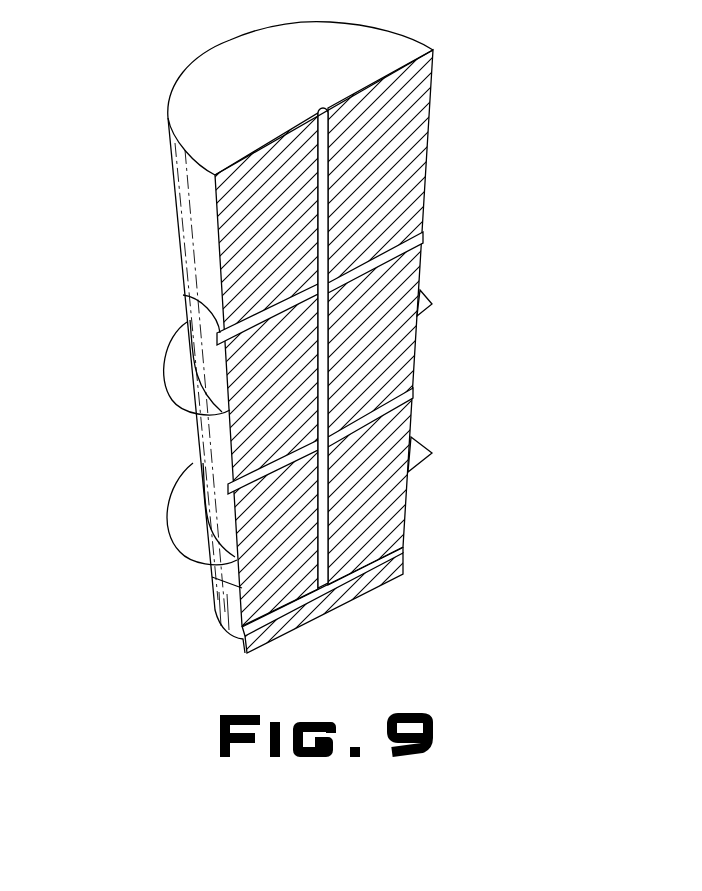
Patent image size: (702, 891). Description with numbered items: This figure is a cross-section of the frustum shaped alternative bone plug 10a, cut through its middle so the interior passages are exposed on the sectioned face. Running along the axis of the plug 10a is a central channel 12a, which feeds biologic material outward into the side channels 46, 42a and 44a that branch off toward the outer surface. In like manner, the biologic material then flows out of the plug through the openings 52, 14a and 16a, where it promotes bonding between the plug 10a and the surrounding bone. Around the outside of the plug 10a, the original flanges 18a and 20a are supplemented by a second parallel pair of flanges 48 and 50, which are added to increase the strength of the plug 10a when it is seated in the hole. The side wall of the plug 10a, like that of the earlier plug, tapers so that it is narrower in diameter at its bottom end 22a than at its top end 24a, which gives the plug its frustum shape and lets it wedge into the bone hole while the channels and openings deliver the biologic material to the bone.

The alternative plug 10a is at (301, 335).
The central channel 12a is at (325, 150).
The opening 14a is at (415, 389).
The opening 16a is at (304, 599).
The flange 18a is at (168, 520).
The flange 20a is at (433, 450).
The bottom end 22a is at (215, 604).
The top end 24a is at (173, 186).
The side channel 42a is at (290, 458).
The side channel 44a is at (338, 577).
The side channel 46 is at (421, 233).
The flange 48 is at (168, 368).
The flange 50 is at (433, 303).
The opening 52 is at (183, 295).